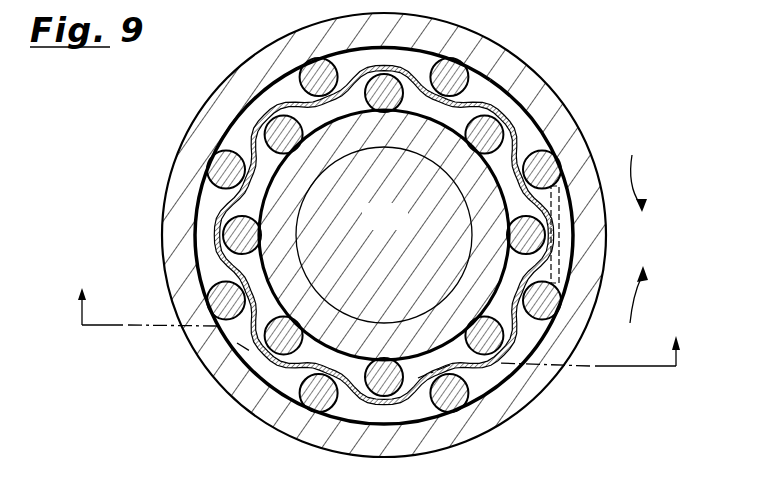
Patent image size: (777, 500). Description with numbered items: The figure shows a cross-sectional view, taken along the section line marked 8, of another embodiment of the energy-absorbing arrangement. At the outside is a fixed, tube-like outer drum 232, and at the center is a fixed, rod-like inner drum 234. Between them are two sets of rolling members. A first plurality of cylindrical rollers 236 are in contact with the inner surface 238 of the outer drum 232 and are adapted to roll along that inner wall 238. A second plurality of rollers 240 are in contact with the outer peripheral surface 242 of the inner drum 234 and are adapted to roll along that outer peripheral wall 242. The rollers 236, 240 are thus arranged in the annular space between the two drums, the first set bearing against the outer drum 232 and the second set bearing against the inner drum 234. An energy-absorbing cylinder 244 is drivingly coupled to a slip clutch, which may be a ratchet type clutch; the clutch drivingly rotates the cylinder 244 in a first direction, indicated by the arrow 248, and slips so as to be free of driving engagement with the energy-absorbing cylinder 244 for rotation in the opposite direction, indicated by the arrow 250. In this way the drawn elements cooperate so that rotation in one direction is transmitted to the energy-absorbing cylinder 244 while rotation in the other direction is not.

The fixed outer drum 232 is at (580, 133).
The fixed inner drum 234 is at (408, 226).
The first plurality of cylindrical rollers 236 is at (270, 404).
The inner surface of the outer drum 238 is at (253, 367).
The second plurality of rollers 240 is at (413, 380).
The outer peripheral surface of the inner drum 242 is at (462, 107).
The energy-absorbing cylinder 244 is at (508, 82).
The arrow indicating first direction 248 is at (668, 179).
The arrow indicating opposite direction 250 is at (631, 307).
The section line 8- 8 is at (380, 320).